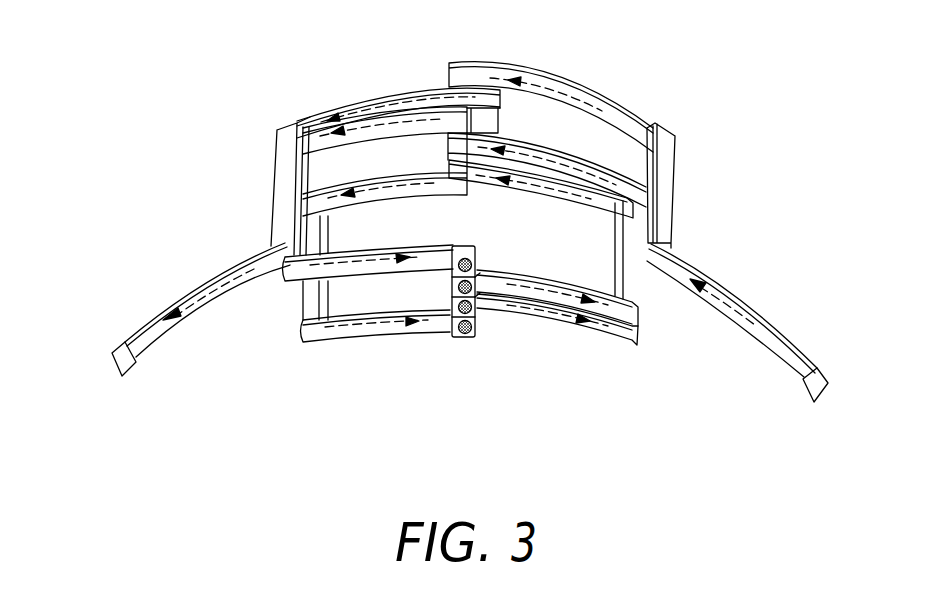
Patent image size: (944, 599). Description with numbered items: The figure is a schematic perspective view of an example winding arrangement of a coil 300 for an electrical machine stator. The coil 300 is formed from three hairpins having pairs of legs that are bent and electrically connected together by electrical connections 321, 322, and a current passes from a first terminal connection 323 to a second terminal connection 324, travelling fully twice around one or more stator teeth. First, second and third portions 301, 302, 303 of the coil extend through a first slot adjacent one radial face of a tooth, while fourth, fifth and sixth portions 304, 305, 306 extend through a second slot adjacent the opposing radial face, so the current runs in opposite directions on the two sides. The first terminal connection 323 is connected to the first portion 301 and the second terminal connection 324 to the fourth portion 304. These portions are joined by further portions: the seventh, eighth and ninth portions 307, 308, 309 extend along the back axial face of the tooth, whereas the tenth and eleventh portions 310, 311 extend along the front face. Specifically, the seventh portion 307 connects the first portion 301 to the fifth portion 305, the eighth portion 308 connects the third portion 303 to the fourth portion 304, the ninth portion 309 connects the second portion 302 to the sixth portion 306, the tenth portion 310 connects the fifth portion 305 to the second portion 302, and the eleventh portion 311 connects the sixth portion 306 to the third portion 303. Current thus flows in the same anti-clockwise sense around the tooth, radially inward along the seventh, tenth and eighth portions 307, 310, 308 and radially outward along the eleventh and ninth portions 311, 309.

The coil 300 is at (150, 88).
The first portion 301 is at (667, 191).
The second portion 302 is at (627, 222).
The third portion 303 is at (607, 258).
The fourth portion 304 is at (283, 185).
The fifth portion 305 is at (298, 212).
The sixth portion 306 is at (310, 305).
The seventh portion 307 is at (567, 78).
The eighth portion 308 is at (585, 140).
The ninth portion 309 is at (357, 102).
The tenth portion 310 is at (427, 245).
The eleventh portion 311 is at (426, 334).
The electrical connection 321 is at (478, 276).
The electrical connection 322 is at (470, 338).
The first terminal connection 323 is at (812, 388).
The second terminal connection 324 is at (125, 365).